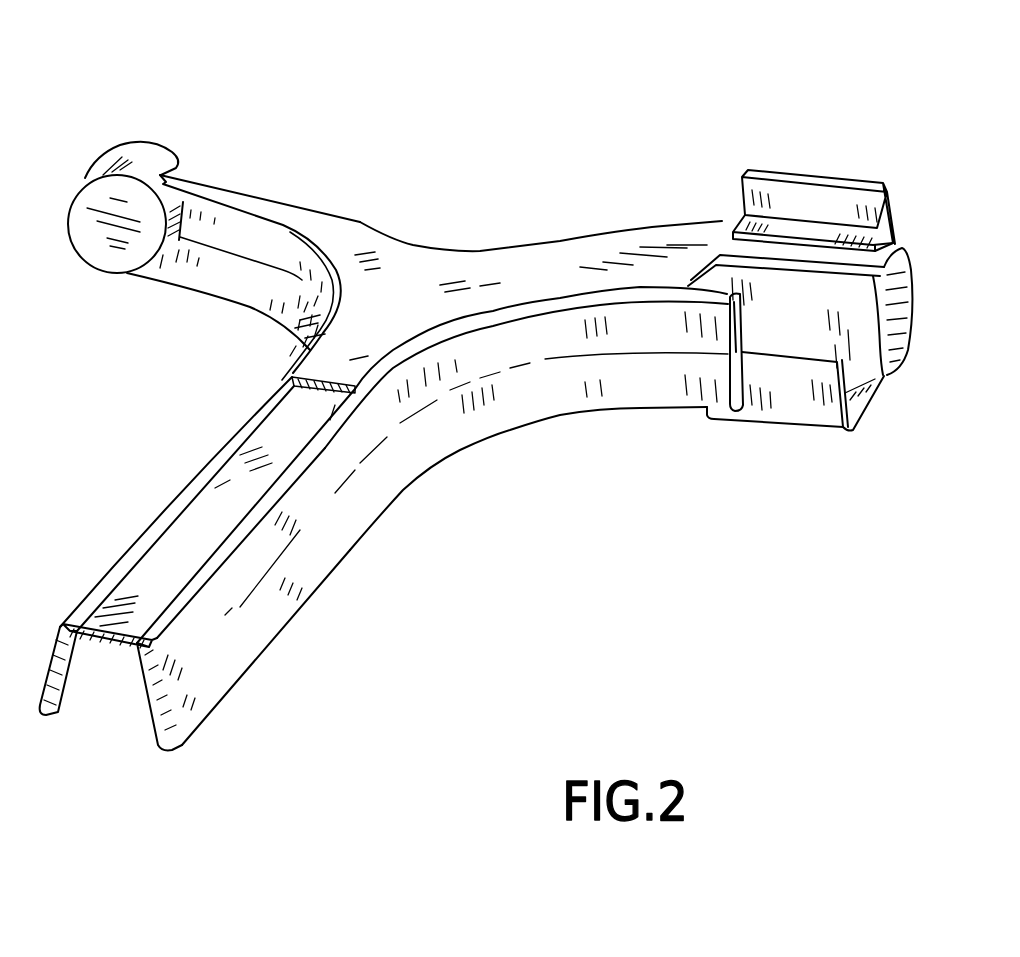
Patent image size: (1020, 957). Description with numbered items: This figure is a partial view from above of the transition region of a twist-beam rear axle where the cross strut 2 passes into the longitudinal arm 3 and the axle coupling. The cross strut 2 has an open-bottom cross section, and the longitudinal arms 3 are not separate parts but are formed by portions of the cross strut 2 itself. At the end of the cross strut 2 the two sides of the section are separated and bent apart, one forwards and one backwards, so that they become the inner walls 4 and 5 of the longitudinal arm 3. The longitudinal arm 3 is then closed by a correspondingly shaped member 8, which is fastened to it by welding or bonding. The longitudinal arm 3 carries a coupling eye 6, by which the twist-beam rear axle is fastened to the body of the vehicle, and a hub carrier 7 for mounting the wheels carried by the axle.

The cross strut 2 is at (263, 650).
The longitudinal arm 3 is at (530, 165).
The inner wall 4 is at (225, 267).
The inner wall 5 is at (597, 377).
The coupling eye 6 is at (143, 158).
The hub carrier 7 is at (833, 200).
The shaped member 8 is at (432, 280).